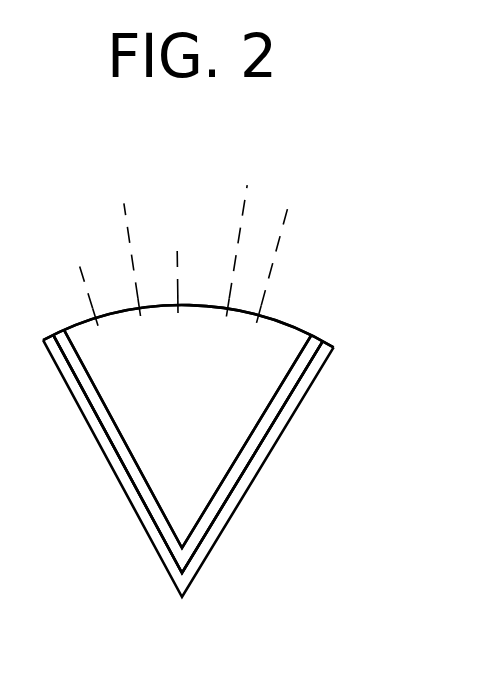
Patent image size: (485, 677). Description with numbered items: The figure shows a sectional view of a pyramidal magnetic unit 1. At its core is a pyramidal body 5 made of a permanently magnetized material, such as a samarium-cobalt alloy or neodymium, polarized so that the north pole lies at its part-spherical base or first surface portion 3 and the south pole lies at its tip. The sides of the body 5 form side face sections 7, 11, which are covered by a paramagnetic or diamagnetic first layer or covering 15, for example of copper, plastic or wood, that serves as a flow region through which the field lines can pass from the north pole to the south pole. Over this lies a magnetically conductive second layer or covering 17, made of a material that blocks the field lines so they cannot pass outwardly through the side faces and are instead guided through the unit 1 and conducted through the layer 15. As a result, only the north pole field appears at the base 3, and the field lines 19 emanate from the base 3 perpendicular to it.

The pyramidal magnetic unit 1 is at (355, 300).
The base or first surface portion 3 is at (282, 300).
The pyramidal body 5 is at (208, 423).
The side face section 7 is at (233, 465).
The side face section 11 is at (127, 447).
The first layer or covering 15 is at (305, 362).
The second layer or covering 17 is at (290, 407).
The field lines 19 is at (240, 218).